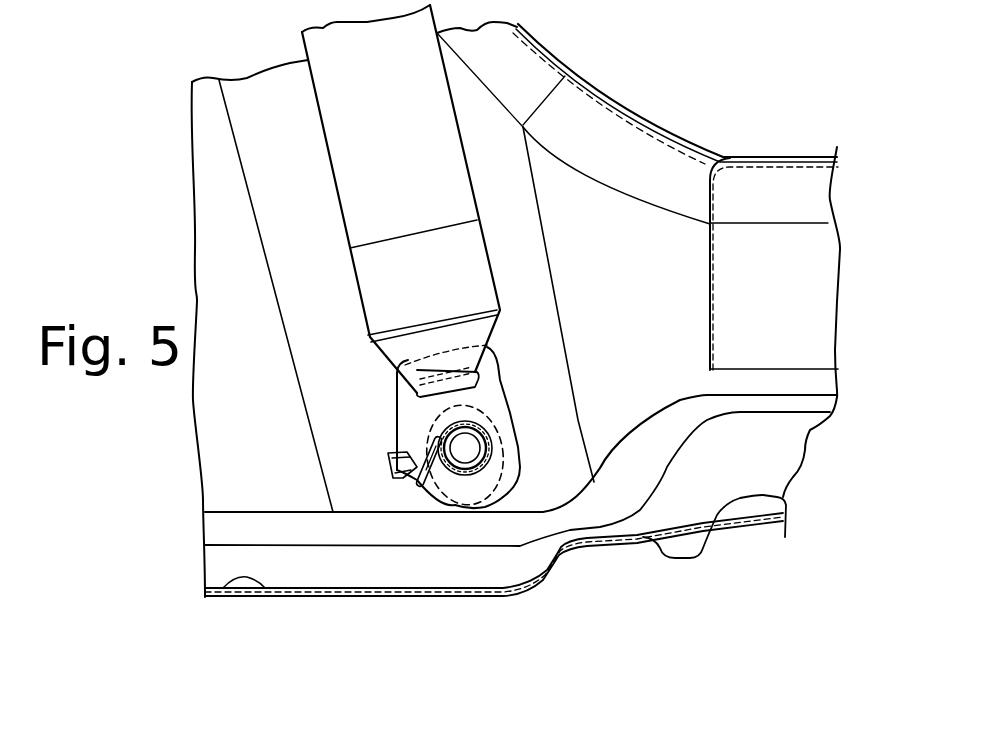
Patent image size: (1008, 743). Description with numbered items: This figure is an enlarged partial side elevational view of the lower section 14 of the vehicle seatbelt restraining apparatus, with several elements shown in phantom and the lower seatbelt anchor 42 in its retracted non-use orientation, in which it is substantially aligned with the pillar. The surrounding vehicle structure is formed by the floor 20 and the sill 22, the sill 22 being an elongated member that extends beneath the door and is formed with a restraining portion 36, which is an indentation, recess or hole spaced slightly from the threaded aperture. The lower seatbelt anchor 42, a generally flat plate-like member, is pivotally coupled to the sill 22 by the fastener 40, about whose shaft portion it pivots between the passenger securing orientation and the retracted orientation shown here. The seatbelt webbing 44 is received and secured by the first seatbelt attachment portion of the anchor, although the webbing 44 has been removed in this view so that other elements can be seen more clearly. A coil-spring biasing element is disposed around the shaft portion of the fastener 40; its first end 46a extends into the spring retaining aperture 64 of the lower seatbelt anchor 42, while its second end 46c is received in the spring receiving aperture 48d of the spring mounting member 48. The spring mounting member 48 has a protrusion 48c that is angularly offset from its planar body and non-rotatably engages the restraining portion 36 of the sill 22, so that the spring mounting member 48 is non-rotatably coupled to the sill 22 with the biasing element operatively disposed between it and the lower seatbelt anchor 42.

The lower section 14 is at (478, 113).
The floor 20 is at (220, 590).
The sill 22 is at (768, 287).
The restraining portion 36 is at (397, 462).
The fastener 40 is at (467, 448).
The lower seatbelt anchor 42 is at (490, 397).
The seatbelt webbing 44 is at (350, 57).
The first end 46a is at (415, 482).
The second end 46c is at (478, 500).
The spring mounting member 48 is at (498, 480).
The protrusion 48c is at (417, 452).
The spring receiving aperture 48d is at (539, 566).
The spring retaining aperture 64 is at (360, 552).